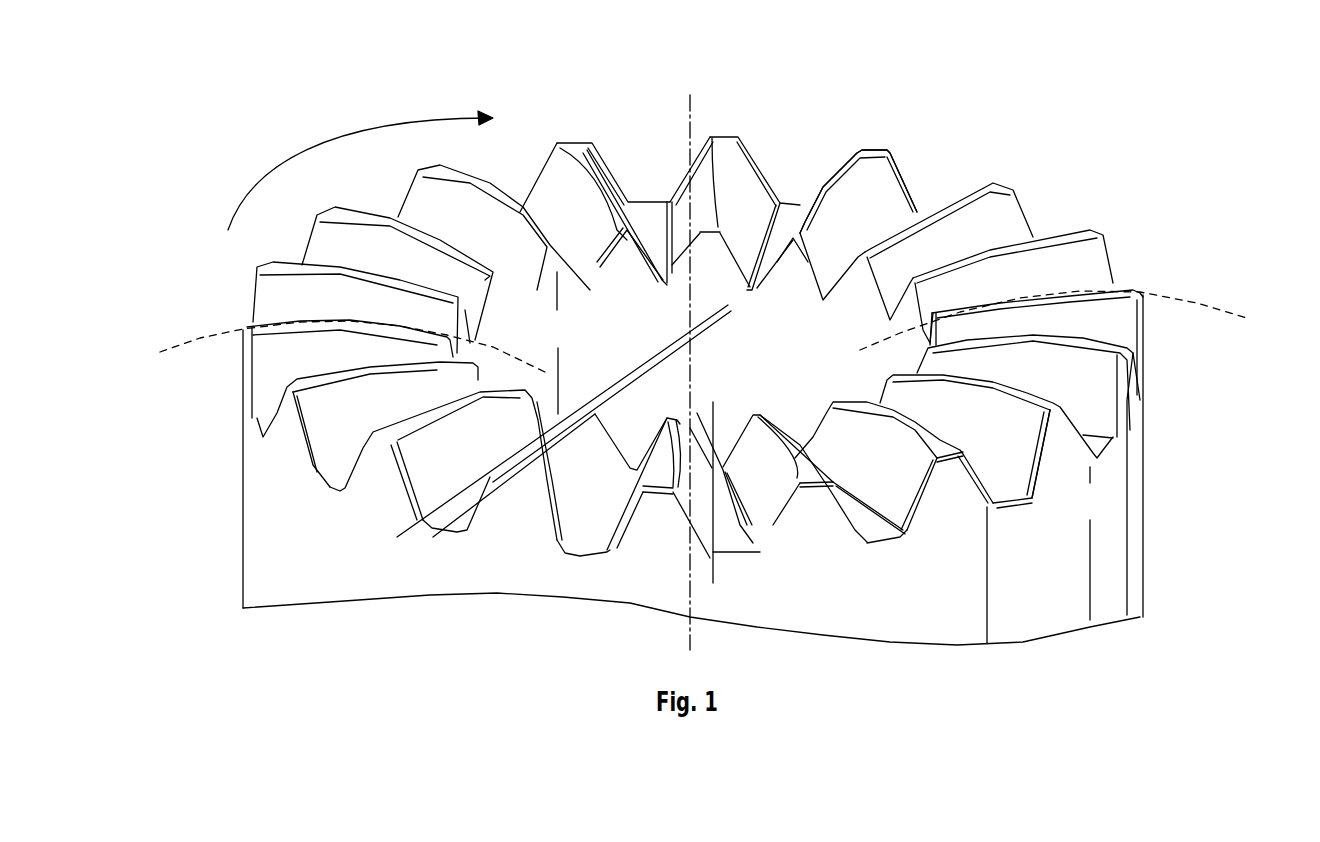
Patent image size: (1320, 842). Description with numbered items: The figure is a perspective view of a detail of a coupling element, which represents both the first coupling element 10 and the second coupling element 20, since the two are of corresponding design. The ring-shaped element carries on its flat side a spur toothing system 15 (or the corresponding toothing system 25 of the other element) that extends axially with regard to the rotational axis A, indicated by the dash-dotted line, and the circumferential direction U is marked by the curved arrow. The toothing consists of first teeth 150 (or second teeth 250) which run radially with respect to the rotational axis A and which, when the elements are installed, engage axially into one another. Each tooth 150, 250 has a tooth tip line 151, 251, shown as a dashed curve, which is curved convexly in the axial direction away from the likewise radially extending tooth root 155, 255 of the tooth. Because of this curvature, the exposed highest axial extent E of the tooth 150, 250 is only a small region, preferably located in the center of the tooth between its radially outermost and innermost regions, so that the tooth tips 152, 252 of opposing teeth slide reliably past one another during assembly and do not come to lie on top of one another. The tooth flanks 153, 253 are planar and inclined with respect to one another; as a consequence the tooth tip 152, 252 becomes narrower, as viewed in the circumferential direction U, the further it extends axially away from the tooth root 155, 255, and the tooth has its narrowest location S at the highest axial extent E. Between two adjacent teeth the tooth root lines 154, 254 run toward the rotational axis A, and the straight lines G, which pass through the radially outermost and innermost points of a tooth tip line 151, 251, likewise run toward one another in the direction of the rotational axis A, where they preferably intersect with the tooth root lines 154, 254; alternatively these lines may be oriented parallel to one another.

The first coupling element 10 is at (685, 342).
The second coupling element 20 is at (1023, 97).
The spur toothing system 15 is at (964, 191).
The corresponding toothing system 25 is at (1062, 215).
The first teeth 150 is at (592, 241).
The second teeth 250 is at (512, 270).
The tooth tip line 151 is at (702, 314).
The tooth tip line 251 is at (197, 340).
The tooth tip 152 is at (415, 465).
The tooth tip 252 is at (382, 443).
The tooth flanks 153 is at (1001, 433).
The tooth flanks 253 is at (1013, 440).
The tooth root lines 154 is at (796, 509).
The tooth root lines 254 is at (773, 577).
The tooth root 155 is at (922, 492).
The tooth root 255 is at (878, 525).
The rotational axis A is at (688, 100).
The highest axial extent E is at (809, 138).
The narrowest location S is at (836, 160).
The straight lines G is at (402, 535).
The circumferential direction U is at (268, 167).